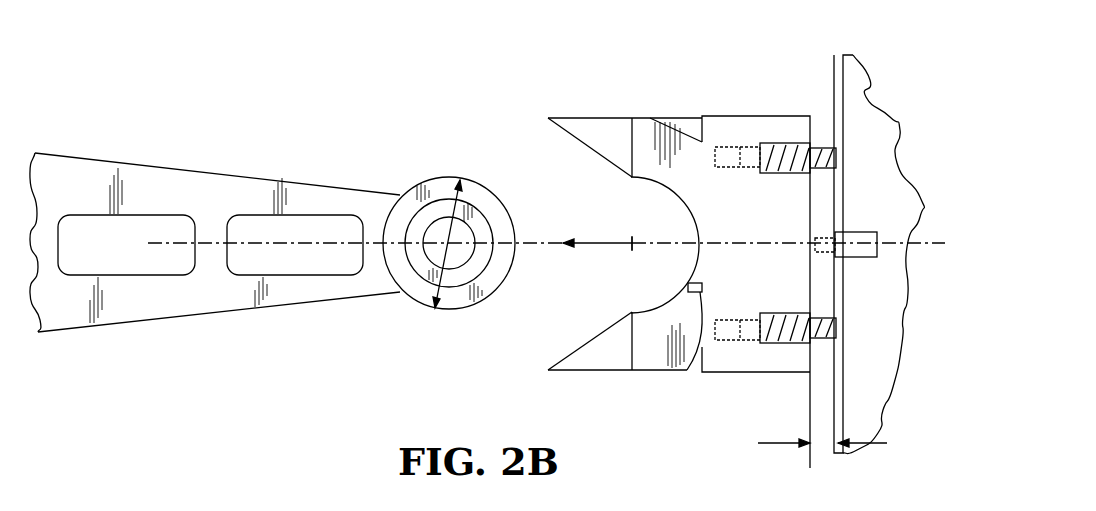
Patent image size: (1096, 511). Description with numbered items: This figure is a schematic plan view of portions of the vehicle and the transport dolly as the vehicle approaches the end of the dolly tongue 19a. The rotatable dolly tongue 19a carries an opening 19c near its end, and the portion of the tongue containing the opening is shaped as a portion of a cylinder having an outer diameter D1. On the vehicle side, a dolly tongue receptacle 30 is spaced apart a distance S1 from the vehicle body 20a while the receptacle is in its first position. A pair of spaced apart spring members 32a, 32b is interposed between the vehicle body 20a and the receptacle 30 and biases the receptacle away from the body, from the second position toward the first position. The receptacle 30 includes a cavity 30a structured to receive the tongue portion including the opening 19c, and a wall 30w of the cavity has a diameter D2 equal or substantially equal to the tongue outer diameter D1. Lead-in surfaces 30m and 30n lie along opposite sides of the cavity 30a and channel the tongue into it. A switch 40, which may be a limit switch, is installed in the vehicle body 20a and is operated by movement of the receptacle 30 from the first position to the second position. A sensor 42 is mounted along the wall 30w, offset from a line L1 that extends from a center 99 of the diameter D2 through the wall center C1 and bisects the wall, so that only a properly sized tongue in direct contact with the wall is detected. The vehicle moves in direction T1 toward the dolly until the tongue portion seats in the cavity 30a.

The dolly tongue 19a is at (163, 186).
The opening 19c is at (448, 217).
The vehicle body 20a is at (873, 117).
The dolly tongue receptacle 30 is at (582, 270).
The cavity 30a is at (648, 220).
The lead-in surface 30m is at (577, 140).
The lead-in surface 30n is at (580, 348).
The wall of the cavity 30w is at (698, 266).
The spring member 32a is at (808, 152).
The spring member 32b is at (834, 332).
The switch 40 is at (857, 231).
The sensor 42 is at (697, 341).
The center 99 is at (632, 246).
The outer diameter D1 is at (425, 282).
The diameter D2 is at (671, 188).
The wall center C1 is at (700, 243).
The direction T1 is at (592, 243).
The line L1 is at (217, 243).
The distance S1 is at (834, 444).